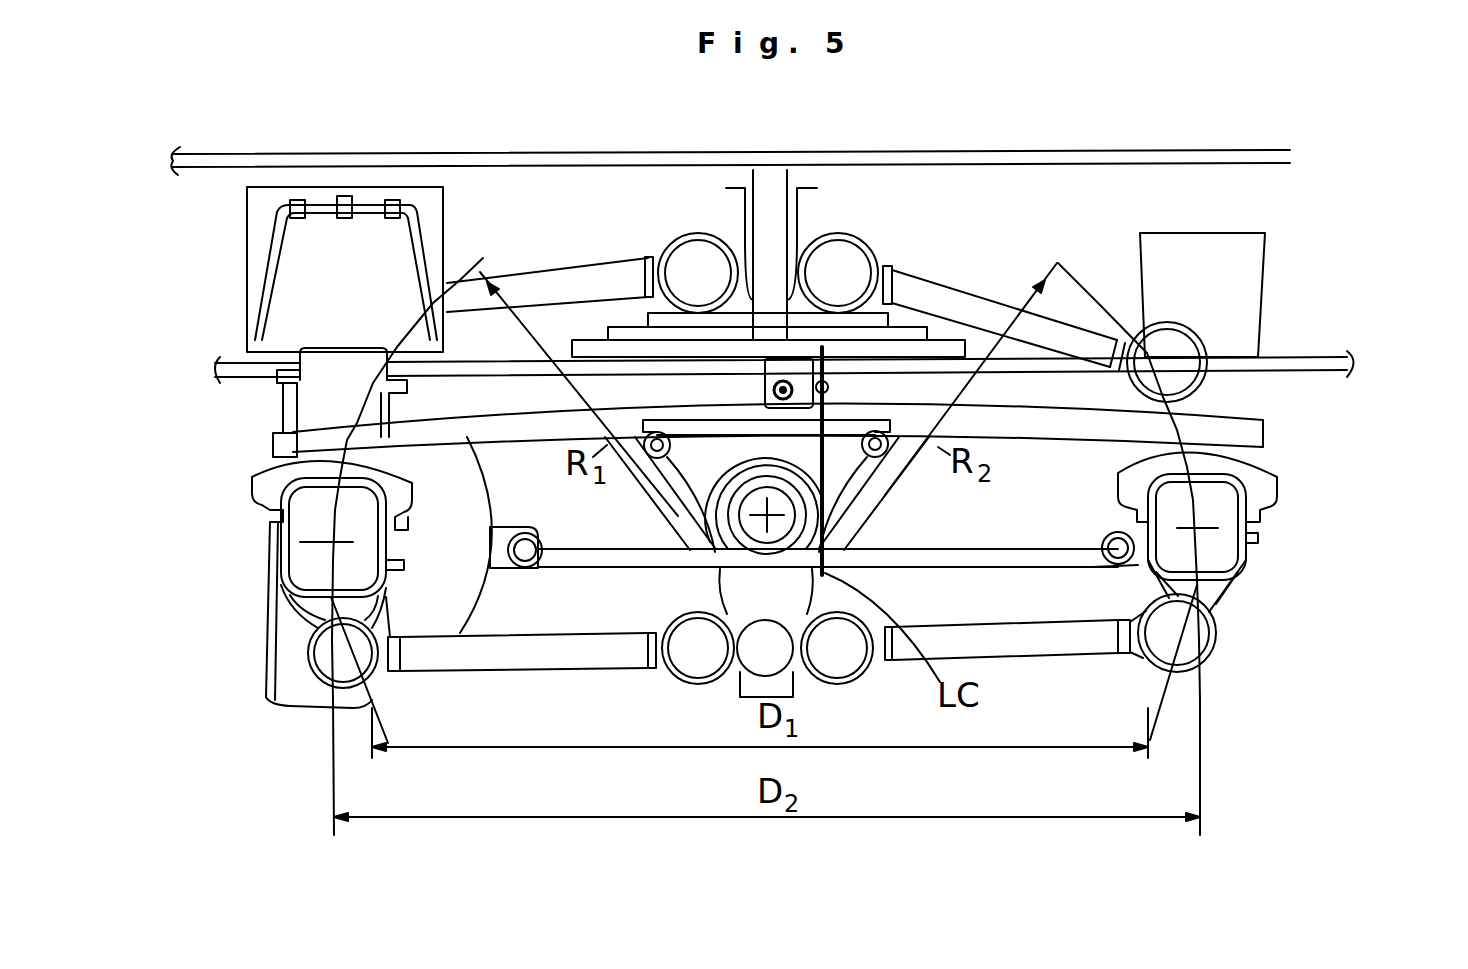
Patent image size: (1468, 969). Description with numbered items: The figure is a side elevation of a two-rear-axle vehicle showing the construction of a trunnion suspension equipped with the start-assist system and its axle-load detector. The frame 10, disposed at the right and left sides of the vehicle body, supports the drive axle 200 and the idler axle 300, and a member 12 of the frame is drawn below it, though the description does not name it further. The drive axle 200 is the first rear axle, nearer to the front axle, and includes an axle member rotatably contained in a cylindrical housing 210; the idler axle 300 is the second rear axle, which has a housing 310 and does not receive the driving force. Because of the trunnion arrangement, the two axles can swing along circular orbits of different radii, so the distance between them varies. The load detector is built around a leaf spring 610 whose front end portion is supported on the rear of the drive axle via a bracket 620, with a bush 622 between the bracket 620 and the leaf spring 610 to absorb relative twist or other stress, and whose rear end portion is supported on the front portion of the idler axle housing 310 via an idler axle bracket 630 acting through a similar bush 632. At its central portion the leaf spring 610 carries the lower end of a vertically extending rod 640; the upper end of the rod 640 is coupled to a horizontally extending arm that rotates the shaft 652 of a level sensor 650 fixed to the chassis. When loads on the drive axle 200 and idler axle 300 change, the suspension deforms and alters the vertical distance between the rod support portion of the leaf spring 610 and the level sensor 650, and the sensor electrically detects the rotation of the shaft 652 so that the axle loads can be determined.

The frame 10 is at (1350, 274).
The cross member 12 is at (1354, 372).
The drive axle 200 is at (232, 567).
The housing 210 is at (270, 511).
The idler axle 300 is at (1324, 460).
The idler axle housing 310 is at (1232, 537).
The leaf spring 610 is at (933, 568).
The bracket 620 is at (497, 542).
The bush 622 is at (528, 567).
The idler axle bracket 630 is at (1147, 573).
The bush 632 is at (1112, 538).
The rod 640 is at (826, 474).
The level sensor 650 is at (836, 334).
The shaft 652 is at (670, 508).